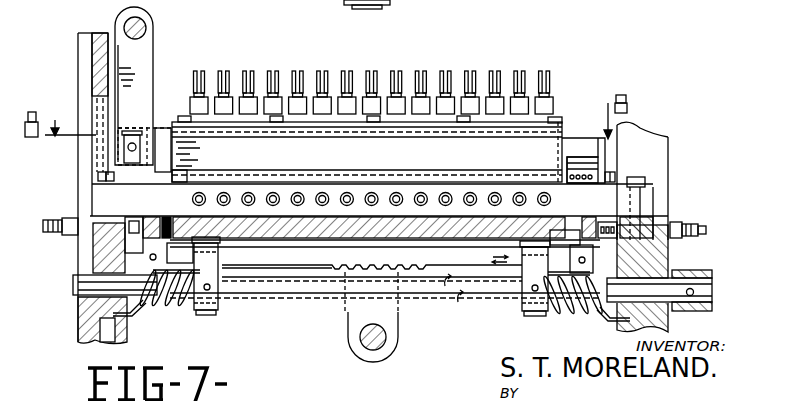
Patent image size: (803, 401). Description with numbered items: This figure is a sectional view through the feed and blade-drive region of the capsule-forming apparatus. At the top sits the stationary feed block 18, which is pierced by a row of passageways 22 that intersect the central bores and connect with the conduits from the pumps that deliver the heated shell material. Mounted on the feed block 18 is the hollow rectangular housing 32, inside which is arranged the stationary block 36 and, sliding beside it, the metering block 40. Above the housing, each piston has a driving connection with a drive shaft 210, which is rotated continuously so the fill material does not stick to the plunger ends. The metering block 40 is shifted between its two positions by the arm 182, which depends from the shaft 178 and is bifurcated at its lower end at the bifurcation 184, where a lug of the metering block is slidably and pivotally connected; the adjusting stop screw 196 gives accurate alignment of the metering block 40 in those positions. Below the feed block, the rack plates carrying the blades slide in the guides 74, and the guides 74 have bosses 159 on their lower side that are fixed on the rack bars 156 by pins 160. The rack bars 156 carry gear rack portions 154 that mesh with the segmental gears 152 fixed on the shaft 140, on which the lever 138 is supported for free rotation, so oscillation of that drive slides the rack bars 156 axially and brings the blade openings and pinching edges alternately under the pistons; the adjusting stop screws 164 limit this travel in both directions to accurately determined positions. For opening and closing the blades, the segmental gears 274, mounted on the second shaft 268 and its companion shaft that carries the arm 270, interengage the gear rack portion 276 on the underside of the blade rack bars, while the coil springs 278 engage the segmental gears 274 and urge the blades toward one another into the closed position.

The stationary feed block 18 is at (650, 186).
The passageways 22 is at (327, 195).
The rectangular housing 32 is at (560, 148).
The stationary block 36 is at (566, 142).
The metering block 40 is at (164, 128).
The guides 74 is at (152, 197).
The lever 138 is at (306, 6).
The shaft 140 is at (358, 347).
The segmental gears 152 is at (347, 316).
The gear rack portions 154 is at (411, 266).
The rack bars 156 is at (312, 264).
The bosses 159 is at (148, 259).
The pins 160 is at (694, 252).
The adjusting stop screws 164 is at (50, 220).
The shaft 178 is at (147, 24).
The arm 182 is at (150, 56).
The bifurcation 184 is at (133, 130).
The adjusting stop screw 196 is at (612, 175).
The drive shaft 210 is at (492, 74).
The second shaft 268 is at (422, 295).
The arm 270 is at (712, 303).
The segmental gears 274 is at (216, 315).
The gear rack portion 276 is at (210, 245).
The coil springs 278 is at (184, 300).